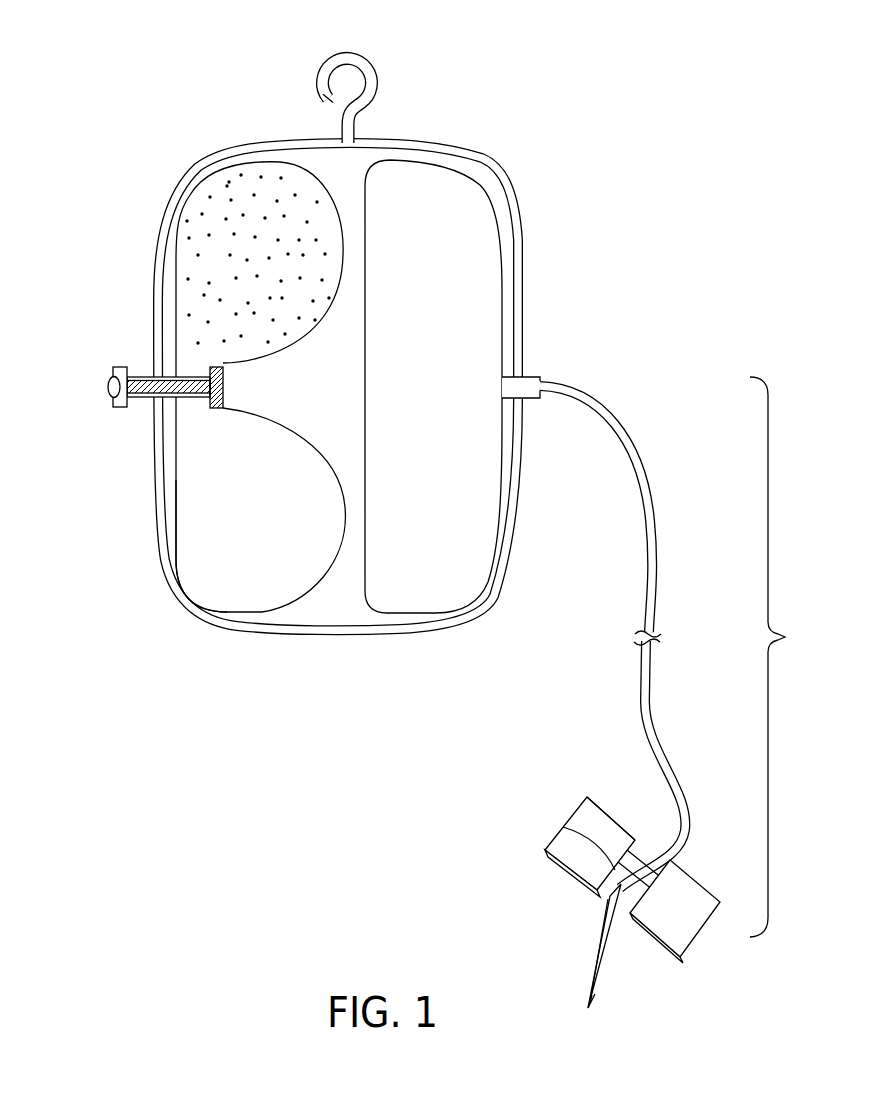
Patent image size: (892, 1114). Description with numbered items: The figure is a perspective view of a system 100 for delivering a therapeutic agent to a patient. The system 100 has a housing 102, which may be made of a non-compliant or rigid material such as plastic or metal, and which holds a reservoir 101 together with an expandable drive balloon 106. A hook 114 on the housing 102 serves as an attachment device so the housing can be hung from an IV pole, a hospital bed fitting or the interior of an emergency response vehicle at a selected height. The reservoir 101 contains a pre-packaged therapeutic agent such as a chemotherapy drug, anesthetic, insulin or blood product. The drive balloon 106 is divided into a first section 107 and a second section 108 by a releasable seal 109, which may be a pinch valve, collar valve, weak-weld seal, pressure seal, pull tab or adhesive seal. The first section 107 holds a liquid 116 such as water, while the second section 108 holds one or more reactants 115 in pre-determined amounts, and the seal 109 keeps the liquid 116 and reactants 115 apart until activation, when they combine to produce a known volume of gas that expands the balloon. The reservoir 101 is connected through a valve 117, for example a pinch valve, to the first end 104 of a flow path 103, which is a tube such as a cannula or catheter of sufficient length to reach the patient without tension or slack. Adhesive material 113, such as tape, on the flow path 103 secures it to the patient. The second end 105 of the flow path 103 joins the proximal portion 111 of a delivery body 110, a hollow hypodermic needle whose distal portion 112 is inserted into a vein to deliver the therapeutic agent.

The system 100 is at (156, 50).
The reservoir 101 is at (470, 238).
The housing 102 is at (497, 175).
The flow path 103 is at (656, 704).
The first end of the flow path 104 is at (610, 417).
The second end of the flow path 105 is at (580, 850).
The drive balloon 106 is at (275, 163).
The first section 107 is at (230, 497).
The second section 108 is at (210, 287).
The releasable seal 109 is at (108, 383).
The delivery body 110 is at (600, 973).
The proximal portion 111 is at (598, 947).
The distal portion 112 is at (588, 1010).
The adhesive material 113 is at (583, 828).
The hook 114 is at (352, 60).
The reactants 115 is at (227, 185).
The liquid 116 is at (197, 542).
The valve 117 is at (533, 373).